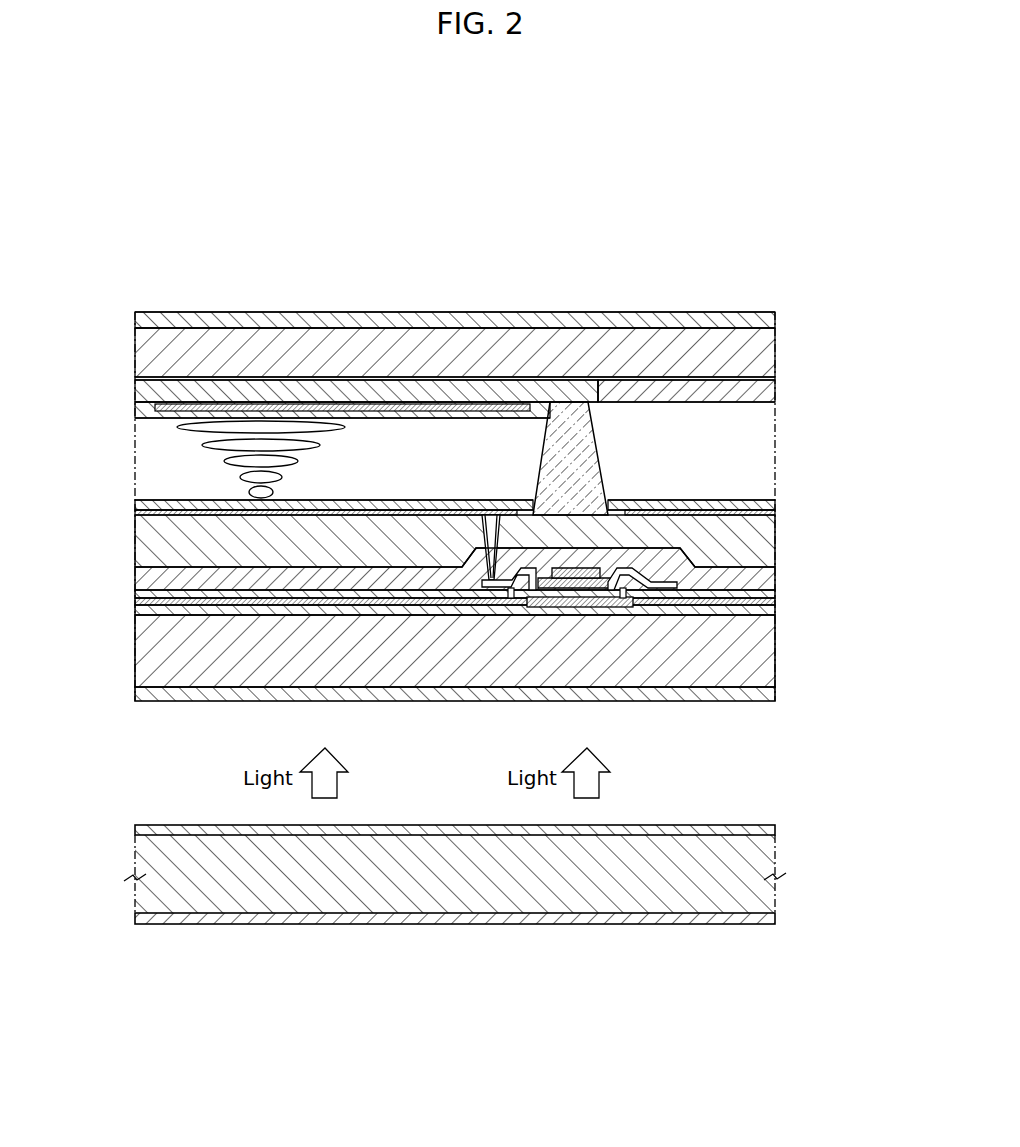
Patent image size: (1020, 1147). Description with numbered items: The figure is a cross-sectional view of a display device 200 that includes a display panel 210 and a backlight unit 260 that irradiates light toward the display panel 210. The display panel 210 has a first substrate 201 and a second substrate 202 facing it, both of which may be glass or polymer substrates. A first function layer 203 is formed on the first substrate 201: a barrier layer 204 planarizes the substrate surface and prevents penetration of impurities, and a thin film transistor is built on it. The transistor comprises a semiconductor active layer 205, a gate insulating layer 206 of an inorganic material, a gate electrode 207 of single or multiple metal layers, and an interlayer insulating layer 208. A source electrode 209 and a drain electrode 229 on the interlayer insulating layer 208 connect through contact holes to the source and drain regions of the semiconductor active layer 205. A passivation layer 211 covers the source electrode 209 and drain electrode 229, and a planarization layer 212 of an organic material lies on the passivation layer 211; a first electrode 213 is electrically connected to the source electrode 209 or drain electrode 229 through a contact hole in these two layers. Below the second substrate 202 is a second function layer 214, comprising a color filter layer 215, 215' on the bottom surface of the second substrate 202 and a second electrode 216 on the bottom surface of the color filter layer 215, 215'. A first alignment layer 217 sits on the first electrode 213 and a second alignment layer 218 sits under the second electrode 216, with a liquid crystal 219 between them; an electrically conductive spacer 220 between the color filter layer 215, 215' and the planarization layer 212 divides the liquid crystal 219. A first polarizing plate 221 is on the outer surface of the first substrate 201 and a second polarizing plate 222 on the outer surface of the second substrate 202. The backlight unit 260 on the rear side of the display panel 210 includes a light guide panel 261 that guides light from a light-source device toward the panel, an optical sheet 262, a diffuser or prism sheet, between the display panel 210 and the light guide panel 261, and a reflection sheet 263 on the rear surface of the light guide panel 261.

The display device 200 is at (226, 205).
The display panel 210 is at (115, 305).
The first substrate 201 is at (766, 655).
The second substrate 202 is at (766, 358).
The first function layer 203 is at (482, 627).
The barrier layer 204 is at (775, 610).
The semiconductor active layer 205 is at (596, 604).
The gate insulating layer 206 is at (773, 601).
The gate electrode 207 is at (560, 590).
The interlayer insulating layer 208 is at (772, 594).
The source electrode 209 is at (643, 598).
The drain electrode 229 is at (511, 598).
The passivation layer 211 is at (770, 578).
The planarization layer 212 is at (768, 545).
The first electrode 213 is at (137, 513).
The second function layer 214 is at (472, 253).
The color filter layer 215 is at (455, 330).
The color filter layer 215' is at (686, 330).
The second electrode 216 is at (374, 403).
The first alignment layer 217 is at (135, 505).
The second alignment layer 218 is at (135, 407).
The liquid crystal 219 is at (163, 463).
The electrically conductive spacer 220 is at (583, 462).
The first polarizing plate 221 is at (768, 695).
The second polarizing plate 222 is at (769, 322).
The backlight unit 260 is at (116, 812).
The light guide panel 261 is at (770, 862).
The optical sheet 262 is at (770, 829).
The reflection sheet 263 is at (770, 917).